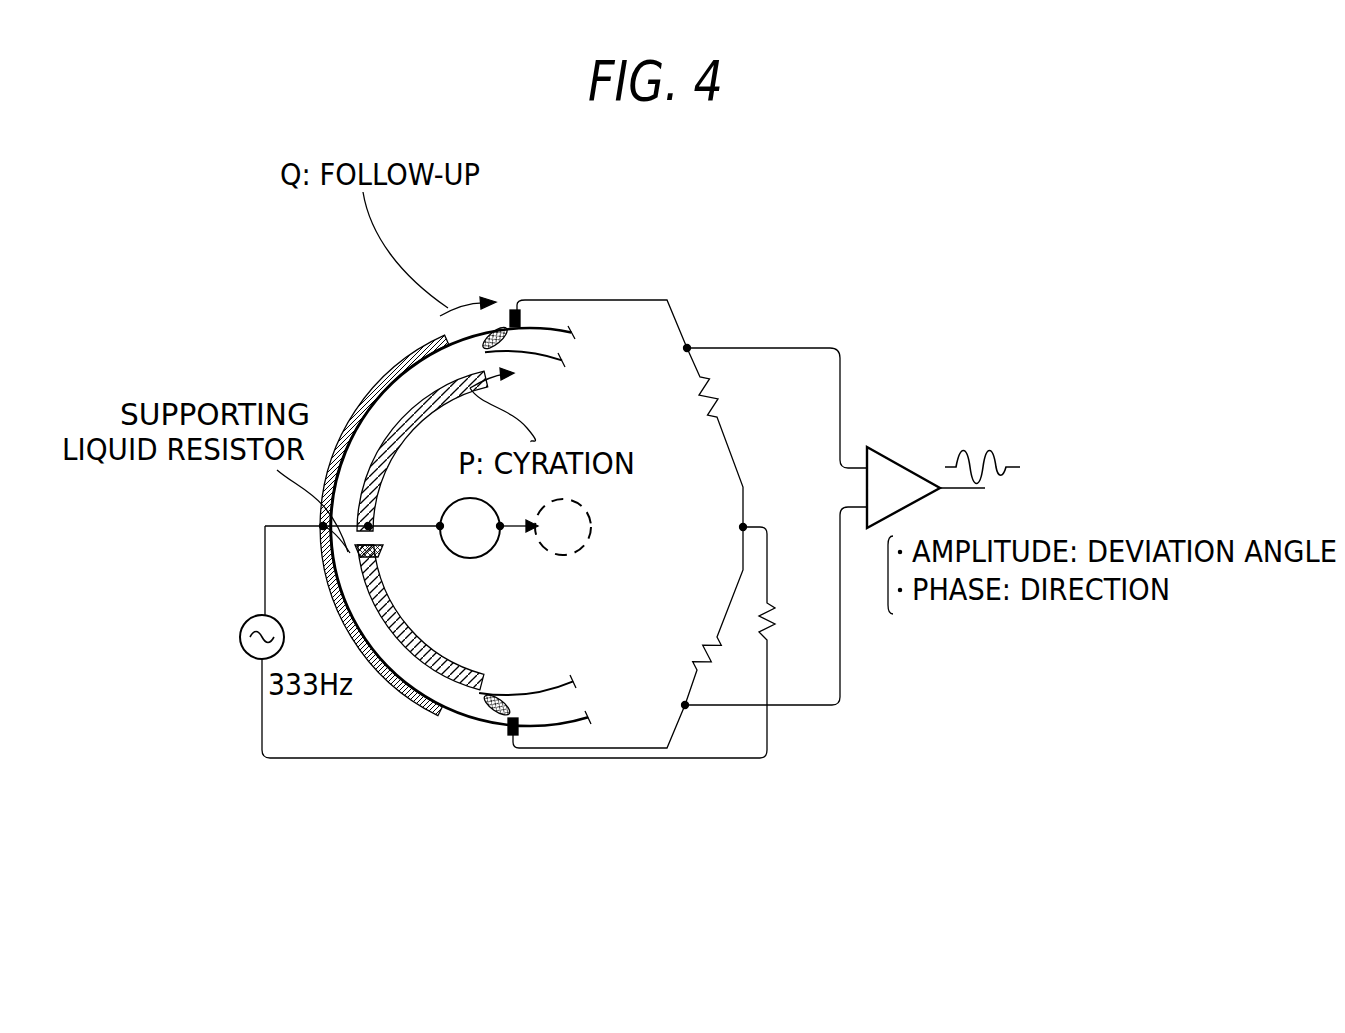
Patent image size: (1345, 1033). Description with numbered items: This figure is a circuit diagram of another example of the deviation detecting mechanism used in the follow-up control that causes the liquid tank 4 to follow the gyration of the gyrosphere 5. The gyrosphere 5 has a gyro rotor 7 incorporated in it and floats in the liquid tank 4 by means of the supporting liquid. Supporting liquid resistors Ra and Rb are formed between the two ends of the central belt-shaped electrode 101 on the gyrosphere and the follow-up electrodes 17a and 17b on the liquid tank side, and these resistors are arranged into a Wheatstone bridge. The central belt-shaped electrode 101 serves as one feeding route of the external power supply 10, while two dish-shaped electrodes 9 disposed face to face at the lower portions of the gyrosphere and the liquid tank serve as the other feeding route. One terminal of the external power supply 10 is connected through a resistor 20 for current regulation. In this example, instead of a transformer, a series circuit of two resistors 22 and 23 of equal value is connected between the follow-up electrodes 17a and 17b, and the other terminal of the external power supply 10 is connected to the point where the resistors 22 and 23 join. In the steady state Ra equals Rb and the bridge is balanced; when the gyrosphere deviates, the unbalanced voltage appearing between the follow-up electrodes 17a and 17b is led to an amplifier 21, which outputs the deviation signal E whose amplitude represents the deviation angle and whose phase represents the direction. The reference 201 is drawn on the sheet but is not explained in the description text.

The liquid tank 4 is at (457, 716).
The gyrosphere 5 is at (535, 357).
The gyro rotor 7 is at (452, 518).
The dish-shaped electrodes 9 is at (600, 527).
The external power supply 10 is at (240, 637).
The follow-up electrode 17a is at (522, 318).
The follow-up electrode 17b is at (518, 735).
The resistor for current regulation 20 is at (778, 627).
The amplifier 21 is at (900, 465).
The resistor 22 is at (720, 396).
The resistor 23 is at (713, 657).
The central belt-shaped electrode 101 is at (433, 647).
The supporting liquid resistor tube (202) 201 is at (378, 387).
The supporting liquid resistor Ra is at (494, 348).
The supporting liquid resistor Rb is at (481, 725).
The deviation signal E is at (977, 450).